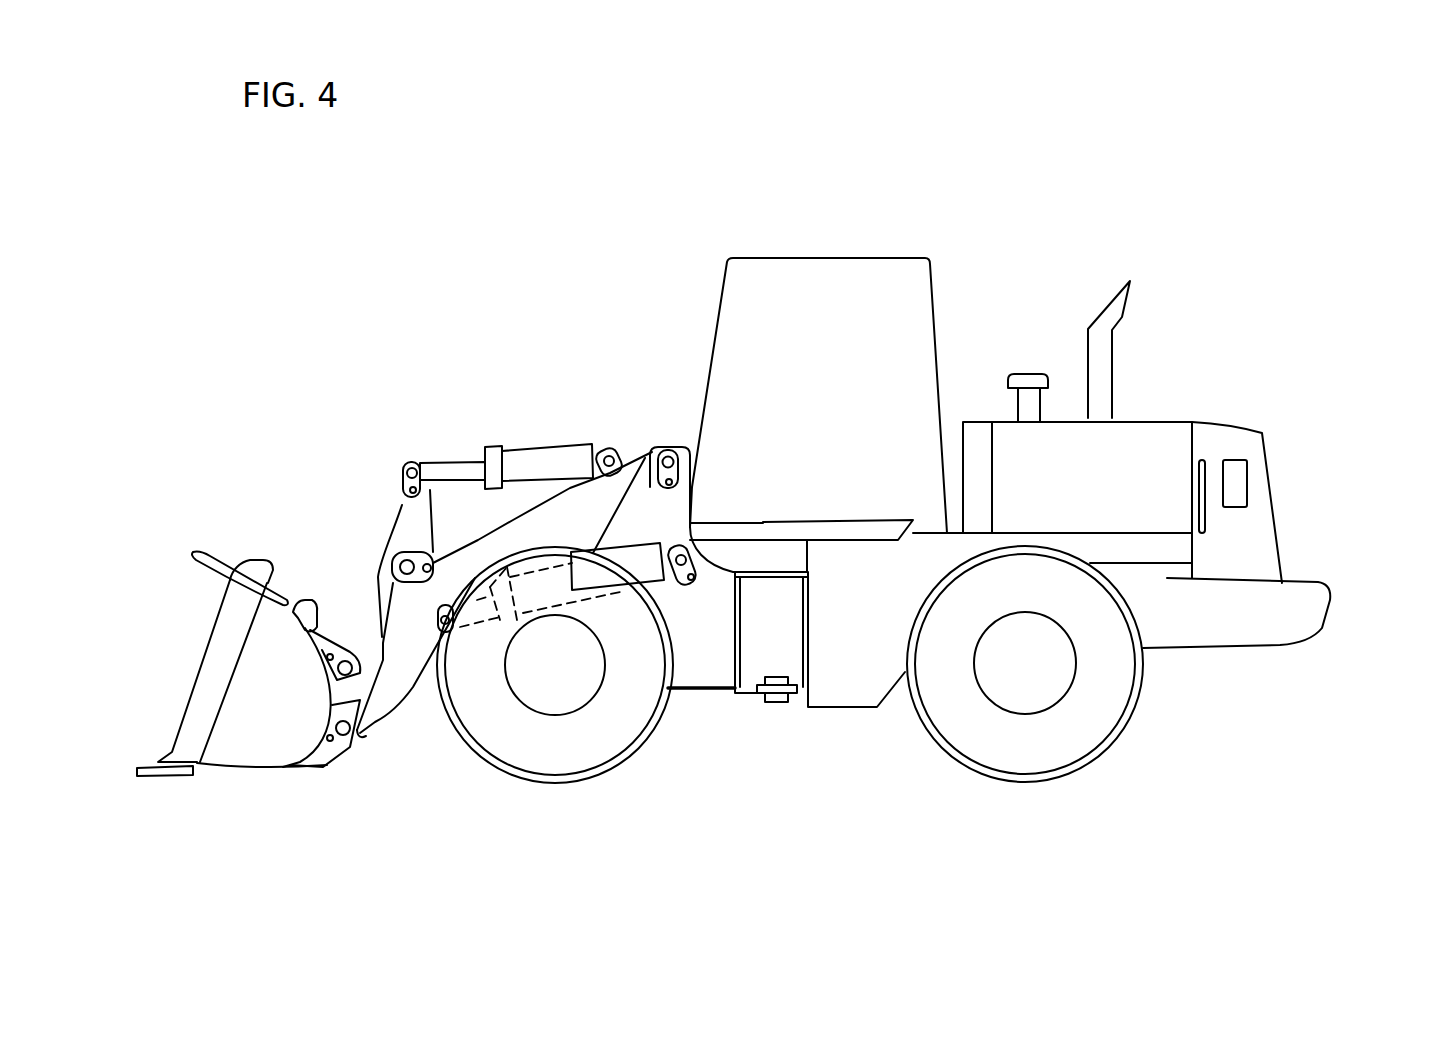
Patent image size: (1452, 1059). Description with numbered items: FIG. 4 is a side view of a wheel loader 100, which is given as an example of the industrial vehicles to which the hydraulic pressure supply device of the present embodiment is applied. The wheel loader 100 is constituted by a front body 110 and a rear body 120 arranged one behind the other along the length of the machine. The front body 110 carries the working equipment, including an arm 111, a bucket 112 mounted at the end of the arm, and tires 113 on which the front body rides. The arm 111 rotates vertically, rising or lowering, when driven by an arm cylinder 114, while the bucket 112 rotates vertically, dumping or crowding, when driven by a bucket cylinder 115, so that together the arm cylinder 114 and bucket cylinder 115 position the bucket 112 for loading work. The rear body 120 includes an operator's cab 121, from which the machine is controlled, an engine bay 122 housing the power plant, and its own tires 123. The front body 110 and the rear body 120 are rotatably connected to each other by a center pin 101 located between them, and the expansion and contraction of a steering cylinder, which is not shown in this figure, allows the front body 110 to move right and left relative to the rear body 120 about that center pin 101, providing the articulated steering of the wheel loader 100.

The wheel loader 100 is at (1220, 677).
The center pin 101 is at (778, 703).
The front body 110 is at (650, 455).
The arm 111 is at (383, 637).
The bucket 112 is at (240, 577).
The tires 113 is at (547, 745).
The arm cylinder 114 is at (503, 627).
The bucket cylinder 115 is at (537, 443).
The rear body 120 is at (1300, 603).
The operator's cab 121 is at (768, 281).
The engine bay 122 is at (1170, 440).
The tires 123 is at (1048, 745).